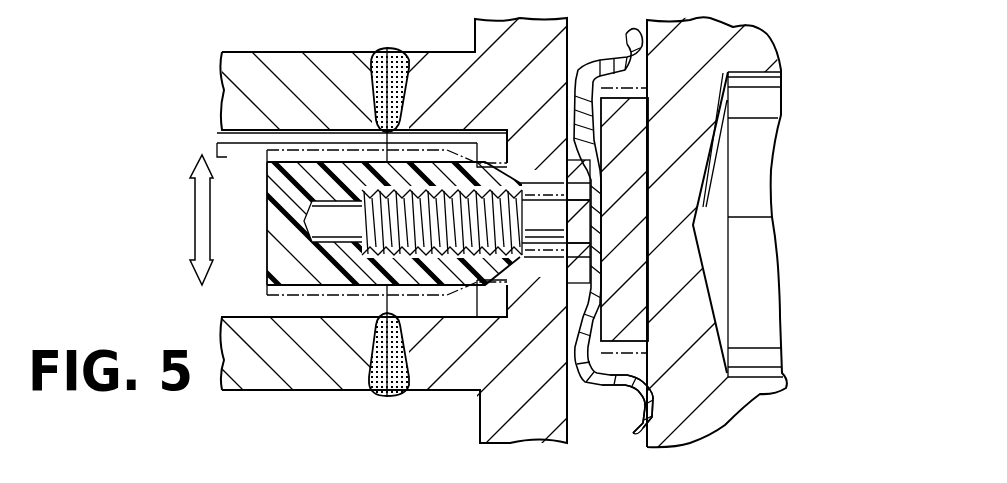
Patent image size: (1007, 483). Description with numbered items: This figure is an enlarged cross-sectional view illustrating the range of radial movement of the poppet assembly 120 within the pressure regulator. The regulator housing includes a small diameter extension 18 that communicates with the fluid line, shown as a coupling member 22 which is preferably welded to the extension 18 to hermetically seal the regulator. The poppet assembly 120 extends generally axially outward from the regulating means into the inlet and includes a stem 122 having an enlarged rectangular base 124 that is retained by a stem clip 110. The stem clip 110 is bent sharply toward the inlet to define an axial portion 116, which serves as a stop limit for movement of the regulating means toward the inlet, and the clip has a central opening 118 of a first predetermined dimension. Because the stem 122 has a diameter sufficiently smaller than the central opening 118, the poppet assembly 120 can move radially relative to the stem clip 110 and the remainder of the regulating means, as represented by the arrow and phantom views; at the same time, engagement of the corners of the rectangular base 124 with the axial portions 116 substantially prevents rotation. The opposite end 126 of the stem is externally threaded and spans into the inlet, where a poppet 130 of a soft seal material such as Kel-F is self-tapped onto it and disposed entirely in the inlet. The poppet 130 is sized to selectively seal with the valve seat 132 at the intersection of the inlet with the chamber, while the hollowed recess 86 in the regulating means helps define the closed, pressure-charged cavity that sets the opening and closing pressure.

The small diameter extension 18 is at (453, 70).
The coupling member 22 is at (243, 85).
The hollowed recess 86 is at (760, 373).
The stem clip 110 is at (615, 438).
The axial portion 116 is at (606, 60).
The central opening 118 is at (598, 187).
The poppet assembly 120 is at (250, 156).
The stem 122 is at (560, 281).
The enlarged rectangular base 124 is at (650, 233).
The externally threaded end of the stem 126 is at (467, 195).
The poppet 130 is at (268, 268).
The valve seat 132 is at (500, 280).